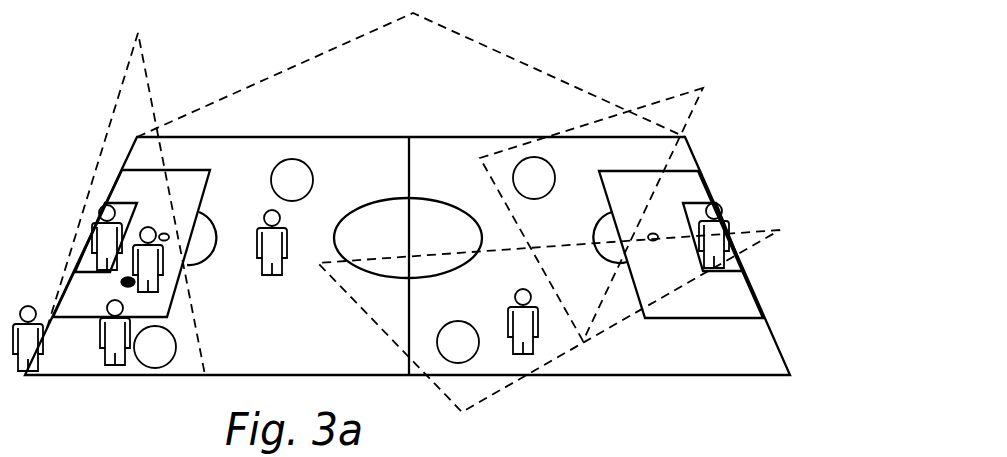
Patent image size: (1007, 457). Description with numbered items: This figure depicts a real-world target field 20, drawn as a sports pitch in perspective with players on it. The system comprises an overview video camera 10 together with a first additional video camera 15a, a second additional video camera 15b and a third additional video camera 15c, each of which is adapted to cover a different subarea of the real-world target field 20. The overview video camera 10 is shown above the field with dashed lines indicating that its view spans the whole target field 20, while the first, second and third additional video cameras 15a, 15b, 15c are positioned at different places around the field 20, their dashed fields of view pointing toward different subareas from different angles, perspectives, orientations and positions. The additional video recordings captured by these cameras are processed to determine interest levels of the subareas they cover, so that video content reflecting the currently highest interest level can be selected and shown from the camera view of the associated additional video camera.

The overview video camera 10 is at (413, 13).
The first additional video camera 15a is at (138, 33).
The second additional video camera 15b is at (703, 88).
The third additional video camera 15c is at (777, 232).
The real-world target field 20 is at (758, 302).